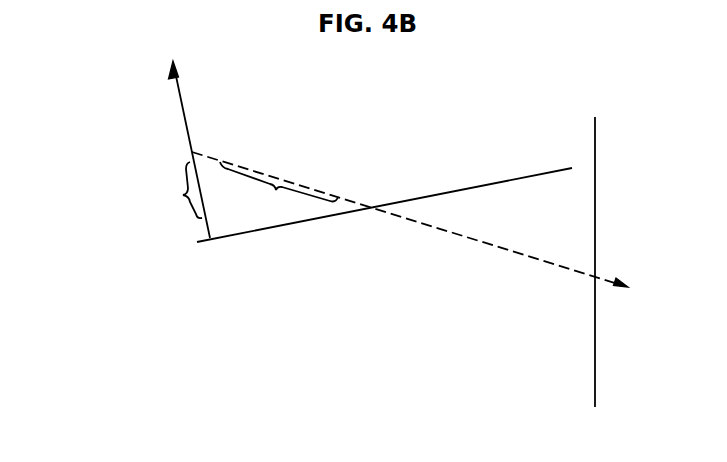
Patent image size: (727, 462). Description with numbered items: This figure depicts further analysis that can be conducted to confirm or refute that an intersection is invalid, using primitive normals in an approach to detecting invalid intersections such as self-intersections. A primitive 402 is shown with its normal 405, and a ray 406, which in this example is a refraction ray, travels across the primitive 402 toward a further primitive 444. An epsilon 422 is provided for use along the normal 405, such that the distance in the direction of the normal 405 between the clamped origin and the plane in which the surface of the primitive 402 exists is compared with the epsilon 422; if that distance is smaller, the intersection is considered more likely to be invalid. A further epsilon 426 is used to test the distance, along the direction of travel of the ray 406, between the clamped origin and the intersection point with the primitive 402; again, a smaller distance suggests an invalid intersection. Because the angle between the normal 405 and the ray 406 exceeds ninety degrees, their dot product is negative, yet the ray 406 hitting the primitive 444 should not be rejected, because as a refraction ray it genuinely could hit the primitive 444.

The normal 405 is at (180, 94).
The primitive 402 is at (427, 193).
The primitive 444 is at (594, 137).
The ray 406 is at (482, 241).
The epsilon 422 is at (183, 192).
The epsilon 426 is at (335, 203).